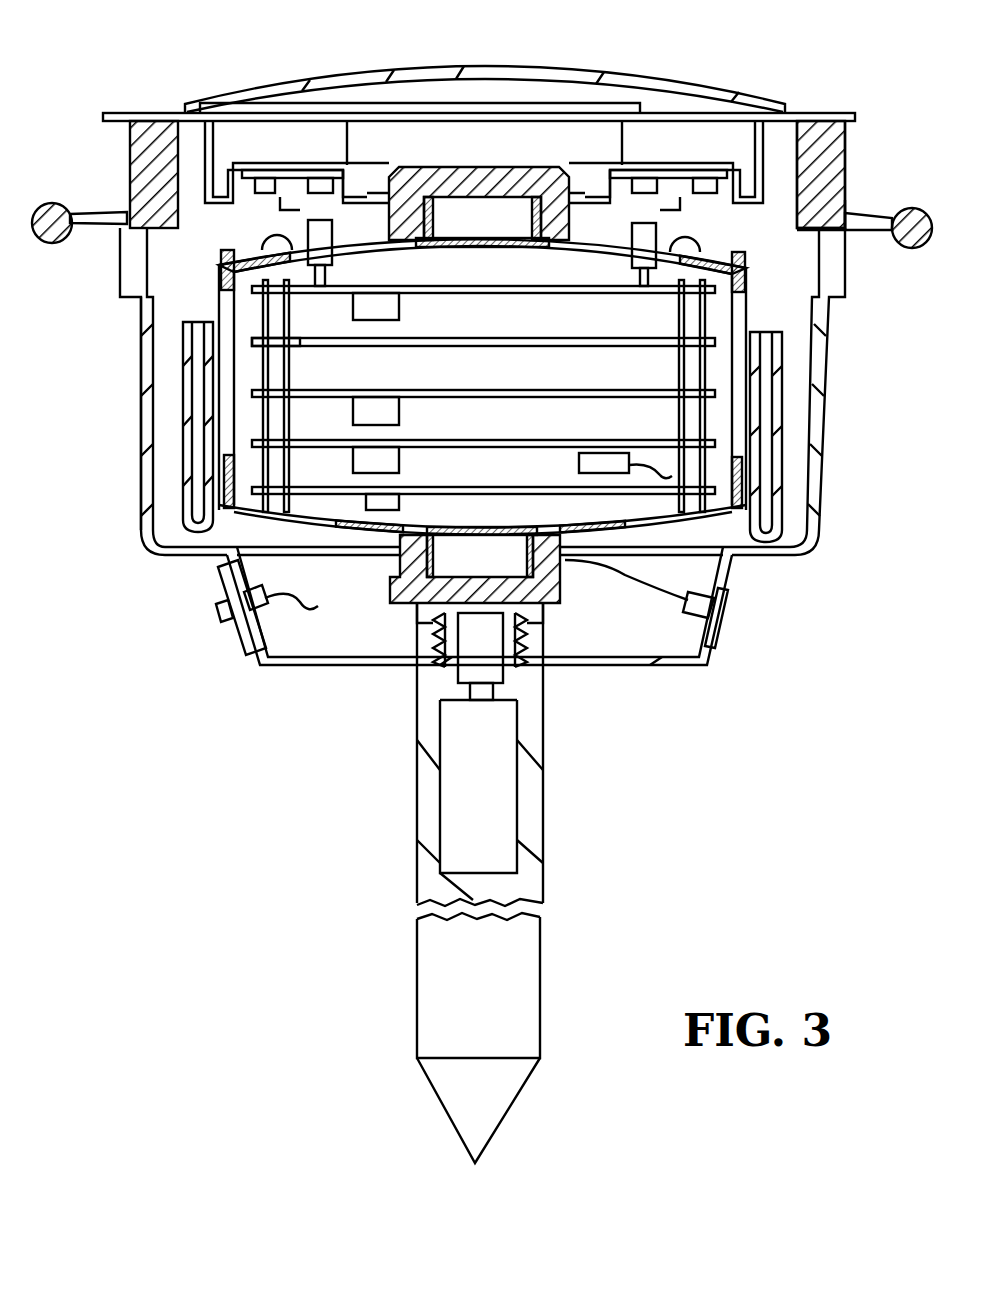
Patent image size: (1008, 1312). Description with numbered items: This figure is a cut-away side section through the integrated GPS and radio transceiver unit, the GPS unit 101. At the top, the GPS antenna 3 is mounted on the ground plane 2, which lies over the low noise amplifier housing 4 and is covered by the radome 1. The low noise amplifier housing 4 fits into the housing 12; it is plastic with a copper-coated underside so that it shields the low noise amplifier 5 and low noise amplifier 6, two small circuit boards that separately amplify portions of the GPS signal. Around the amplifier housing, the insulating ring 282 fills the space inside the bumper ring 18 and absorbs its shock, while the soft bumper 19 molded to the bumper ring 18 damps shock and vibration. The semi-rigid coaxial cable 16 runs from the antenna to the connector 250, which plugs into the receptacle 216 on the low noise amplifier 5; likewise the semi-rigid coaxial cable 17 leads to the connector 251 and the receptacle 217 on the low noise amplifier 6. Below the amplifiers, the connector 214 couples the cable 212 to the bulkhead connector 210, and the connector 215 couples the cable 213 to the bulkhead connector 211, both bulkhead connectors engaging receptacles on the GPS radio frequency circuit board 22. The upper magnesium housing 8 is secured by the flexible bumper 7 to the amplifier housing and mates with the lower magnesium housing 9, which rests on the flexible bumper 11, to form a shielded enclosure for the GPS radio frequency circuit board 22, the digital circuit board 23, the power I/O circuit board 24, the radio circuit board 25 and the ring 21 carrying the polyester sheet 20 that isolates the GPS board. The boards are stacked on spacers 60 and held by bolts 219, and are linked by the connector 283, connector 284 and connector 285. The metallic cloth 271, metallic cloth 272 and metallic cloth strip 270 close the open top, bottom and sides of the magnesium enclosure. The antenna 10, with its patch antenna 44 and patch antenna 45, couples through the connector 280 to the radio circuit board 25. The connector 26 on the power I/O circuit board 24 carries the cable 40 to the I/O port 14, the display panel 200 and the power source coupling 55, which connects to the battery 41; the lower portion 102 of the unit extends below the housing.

The GPS unit 101 is at (246, 27).
The radome 1 is at (572, 72).
The ground plane 2 is at (812, 113).
The GPS antenna 3 is at (490, 103).
The low noise amplifier housing 4 is at (250, 168).
The low noise amplifier 5 is at (300, 170).
The low noise amplifier 6 is at (690, 170).
The flexible bumper 7 is at (478, 182).
The upper magnesium housing 8 is at (229, 263).
The lower magnesium housing 9 is at (710, 548).
The antenna 10 is at (183, 450).
The flexible bumper 11 is at (587, 596).
The housing 12 is at (827, 356).
The I/O port 14 is at (716, 612).
The semi-rigid coaxial cable 16 is at (350, 144).
The semi-rigid coaxial cable 17 is at (620, 143).
The bumper ring 18 is at (840, 202).
The bumper 19 is at (903, 247).
The polyester sheet 20 is at (542, 338).
The ring 21 is at (302, 348).
The GPS radio frequency circuit board 22 is at (458, 286).
The digital circuit board 23 is at (470, 391).
The power I/O circuit board 24 is at (550, 440).
The radio circuit board 25 is at (300, 487).
The connector 26 is at (579, 465).
The cable 40 is at (652, 470).
The battery 41 is at (480, 753).
The patch antenna 44 is at (197, 322).
The patch antenna 45 is at (770, 332).
The power source coupling 55 is at (480, 656).
The spacer 60 is at (290, 427).
The stake 102 is at (545, 897).
The display panel 200 is at (240, 650).
The bulkhead connector 210 is at (340, 250).
The bulkhead connector 211 is at (630, 246).
The cable 212 is at (290, 200).
The cable 213 is at (682, 204).
The connector 214 is at (263, 183).
The connector 215 is at (710, 188).
The receptacle 216 is at (322, 190).
The receptacle 217 is at (646, 188).
The bolt 219 is at (262, 250).
The connector 250 is at (338, 206).
The connector 251 is at (632, 198).
The metallic cloth strip 270 is at (747, 297).
The metallic cloth 271 is at (700, 248).
The metallic cloth 272 is at (636, 527).
The connector 280 is at (399, 503).
The insulating ring 282 is at (825, 162).
The connector 283 is at (399, 310).
The connector 284 is at (399, 412).
The connector 285 is at (399, 460).